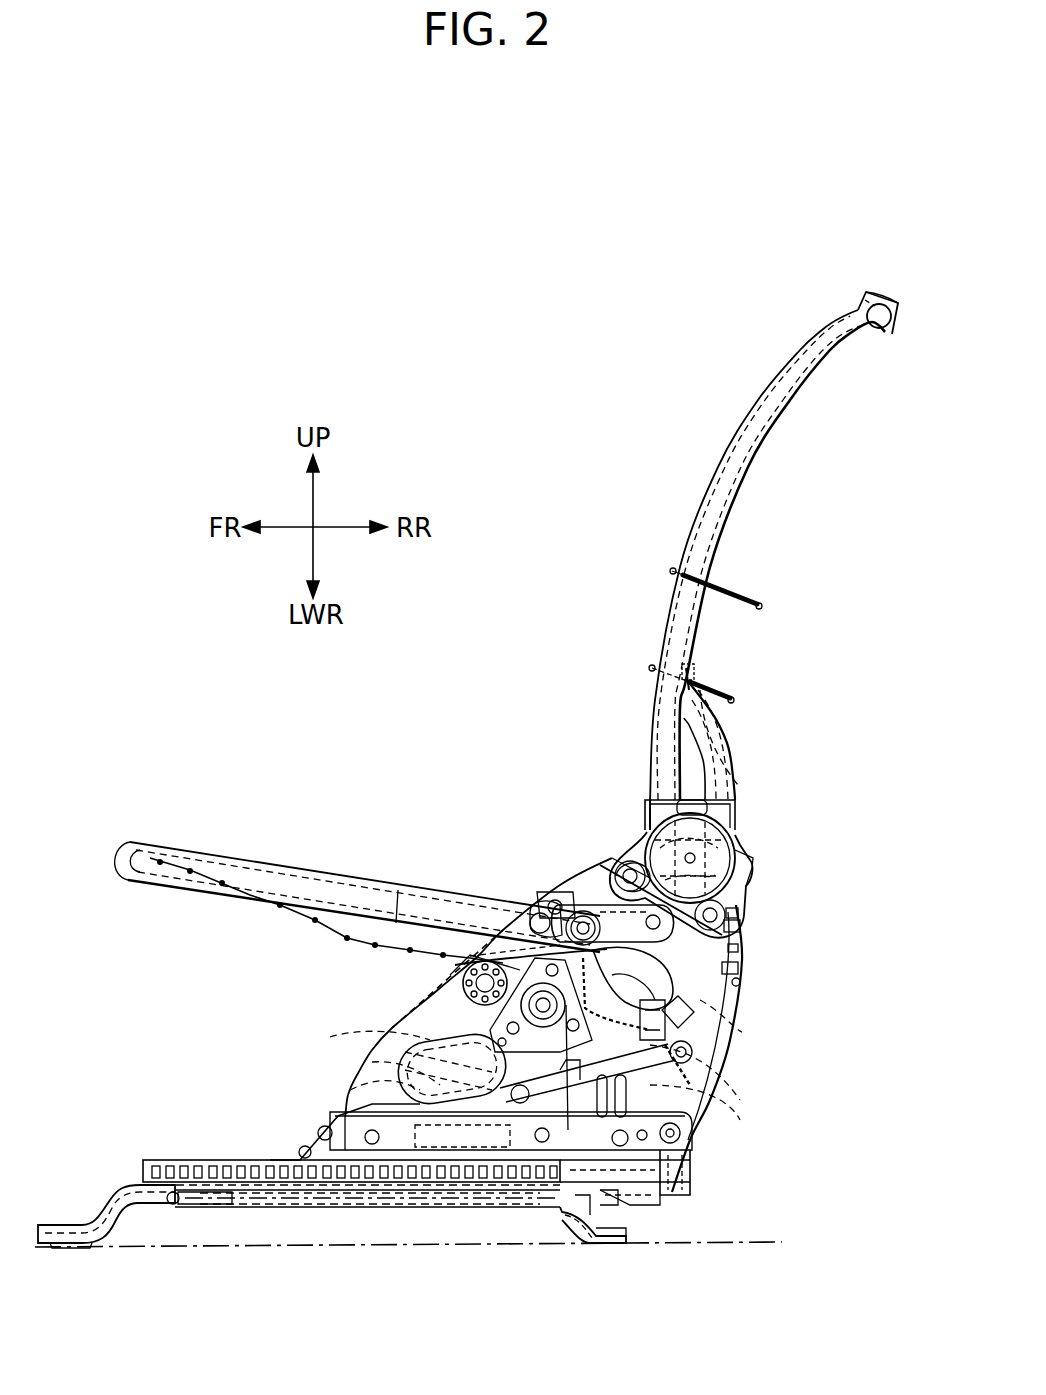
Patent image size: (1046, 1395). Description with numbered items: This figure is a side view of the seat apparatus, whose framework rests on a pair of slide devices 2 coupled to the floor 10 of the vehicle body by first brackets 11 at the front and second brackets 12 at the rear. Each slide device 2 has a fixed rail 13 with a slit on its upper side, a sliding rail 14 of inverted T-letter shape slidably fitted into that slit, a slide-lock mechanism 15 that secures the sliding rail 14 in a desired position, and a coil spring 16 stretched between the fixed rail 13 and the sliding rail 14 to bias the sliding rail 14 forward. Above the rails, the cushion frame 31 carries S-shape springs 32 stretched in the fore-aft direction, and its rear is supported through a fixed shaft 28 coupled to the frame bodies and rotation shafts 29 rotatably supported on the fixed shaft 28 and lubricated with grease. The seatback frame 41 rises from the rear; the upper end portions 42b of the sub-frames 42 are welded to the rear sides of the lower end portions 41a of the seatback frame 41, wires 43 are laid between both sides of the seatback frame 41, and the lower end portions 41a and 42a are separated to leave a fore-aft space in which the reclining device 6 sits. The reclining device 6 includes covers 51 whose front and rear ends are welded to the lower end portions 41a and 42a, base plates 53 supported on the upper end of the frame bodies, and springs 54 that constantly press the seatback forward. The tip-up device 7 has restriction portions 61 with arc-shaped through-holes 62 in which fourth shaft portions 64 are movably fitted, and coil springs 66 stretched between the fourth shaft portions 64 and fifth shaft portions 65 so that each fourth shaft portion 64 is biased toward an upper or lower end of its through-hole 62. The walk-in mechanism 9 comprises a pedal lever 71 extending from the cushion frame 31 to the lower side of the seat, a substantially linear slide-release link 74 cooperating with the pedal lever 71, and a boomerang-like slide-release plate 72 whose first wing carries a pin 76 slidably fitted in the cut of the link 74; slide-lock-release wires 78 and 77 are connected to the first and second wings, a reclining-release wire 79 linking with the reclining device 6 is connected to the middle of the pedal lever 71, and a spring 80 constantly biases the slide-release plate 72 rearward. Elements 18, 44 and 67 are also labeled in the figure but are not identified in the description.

The slide devices 2 is at (287, 1228).
The reclining device 6 is at (770, 852).
The tip-up device 7 is at (712, 1075).
The walk-in mechanism 9 is at (722, 1122).
The floor 10 is at (724, 1242).
The first brackets 11 is at (96, 1205).
The second brackets 12 is at (568, 1243).
The fixed rails 13 is at (338, 1183).
The sliding rails 14 is at (322, 1124).
The slide-lock mechanism 15 is at (468, 1205).
The coil springs 16 is at (248, 1208).
The seat cushion frame 18 is at (300, 1000).
The fixed shaft 28 is at (455, 984).
The rotation shafts 29 is at (460, 960).
The cushion frame 31 is at (330, 882).
The S-shape springs 32 is at (322, 940).
The seatback frame 41 is at (692, 516).
The lower end portions of the seatback frame 41a is at (650, 815).
The sub-frames 42 is at (722, 727).
The lower end portion of the sub-frame 42a is at (740, 786).
The upper end portions of the sub-frames 42b is at (692, 672).
The wires 43 is at (735, 590).
The bracket 44 is at (738, 806).
The covers 51 is at (646, 822).
The base plates 53 is at (748, 896).
The springs 54 is at (738, 838).
The restriction portions 61 is at (742, 946).
The through-hole 62 is at (720, 1000).
The fourth shaft portion 64 is at (548, 906).
The fifth shaft portions 65 is at (528, 908).
The coil springs 66 is at (594, 908).
The pivot 67 is at (712, 1055).
The pedal lever 71 is at (740, 1112).
The slide-release plate 72 is at (332, 1037).
The slide-release link 74 is at (690, 1090).
The pin 76 is at (606, 1205).
The slide-lock-release wire 77 is at (372, 1062).
The slide-lock-release wire 78 is at (742, 1032).
The reclining-release wire 79 is at (742, 980).
The spring 80 is at (410, 1018).